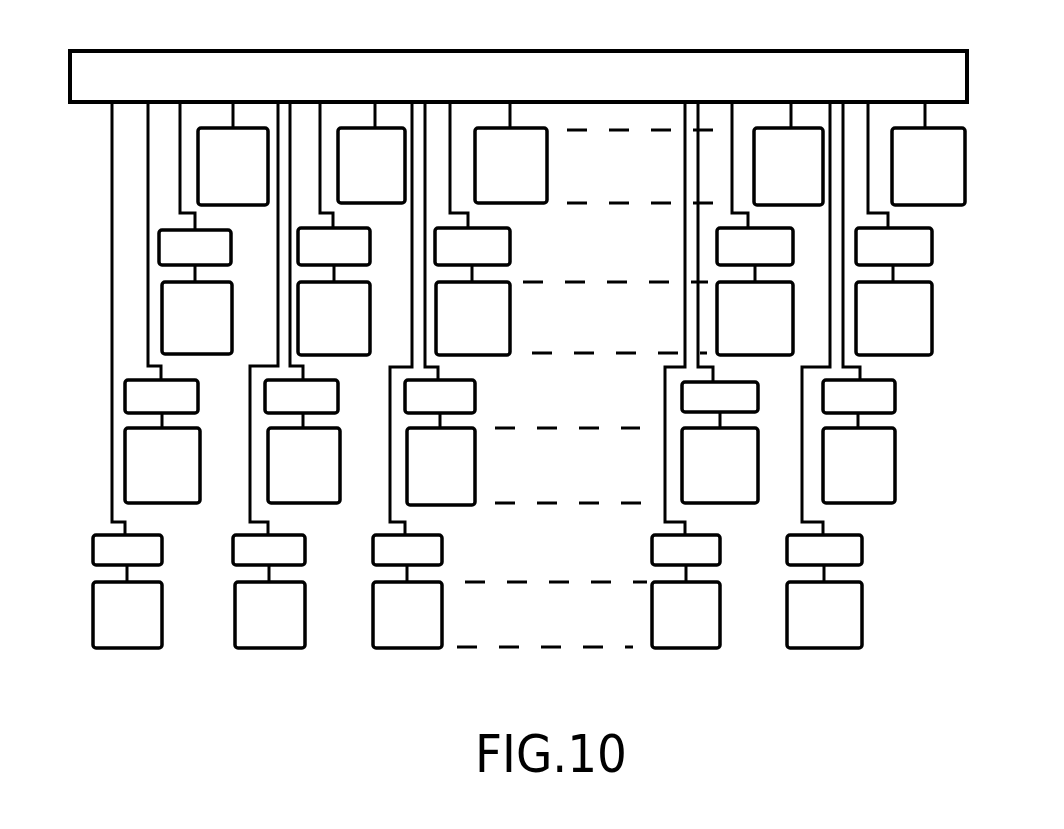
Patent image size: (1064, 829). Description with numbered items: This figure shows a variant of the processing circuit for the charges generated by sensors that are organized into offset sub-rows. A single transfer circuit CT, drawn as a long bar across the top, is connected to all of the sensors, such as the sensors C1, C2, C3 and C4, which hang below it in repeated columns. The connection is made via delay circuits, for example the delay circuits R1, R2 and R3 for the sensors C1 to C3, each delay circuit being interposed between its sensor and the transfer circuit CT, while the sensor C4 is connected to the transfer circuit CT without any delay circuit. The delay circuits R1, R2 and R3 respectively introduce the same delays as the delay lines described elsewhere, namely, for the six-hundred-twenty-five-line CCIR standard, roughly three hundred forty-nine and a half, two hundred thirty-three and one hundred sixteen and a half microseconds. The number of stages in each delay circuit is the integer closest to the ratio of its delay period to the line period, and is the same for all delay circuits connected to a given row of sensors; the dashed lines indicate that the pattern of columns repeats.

The transfer circuit CT is at (968, 58).
The delay circuit R1 is at (127, 550).
The sensor C1 is at (127, 615).
The delay circuit R2 is at (161, 396).
The sensor C2 is at (162, 465).
The delay circuit R3 is at (195, 247).
The sensor C3 is at (197, 318).
The sensor C4 is at (233, 166).